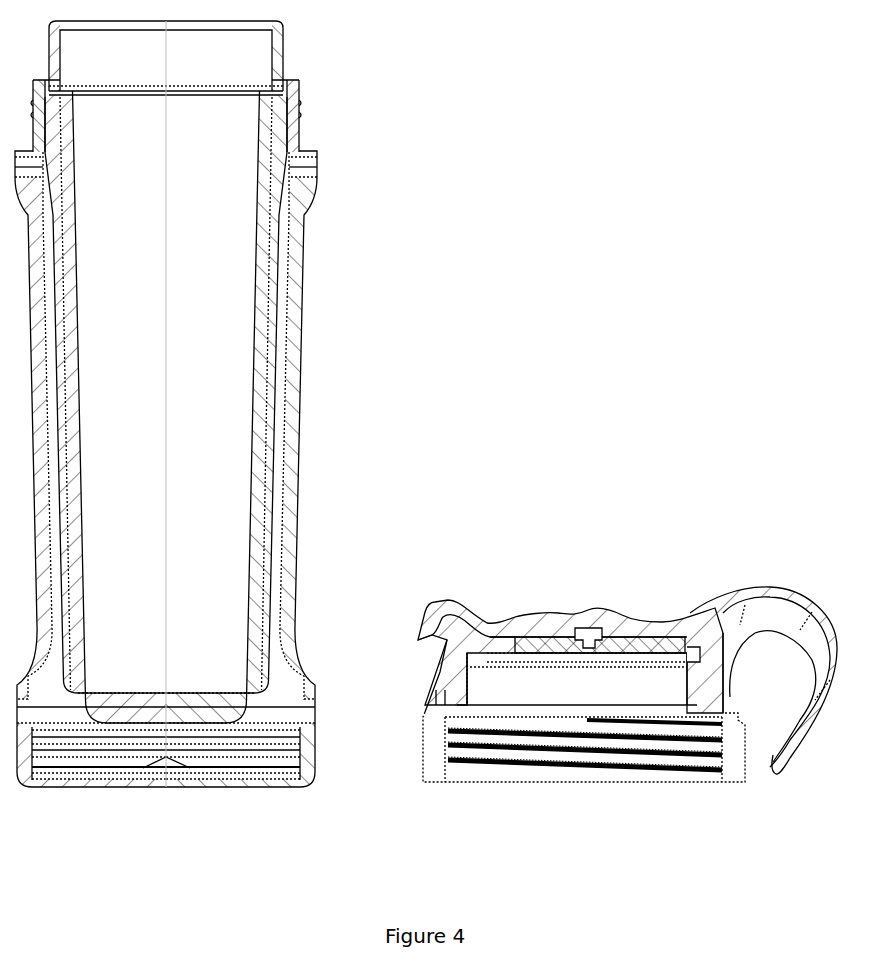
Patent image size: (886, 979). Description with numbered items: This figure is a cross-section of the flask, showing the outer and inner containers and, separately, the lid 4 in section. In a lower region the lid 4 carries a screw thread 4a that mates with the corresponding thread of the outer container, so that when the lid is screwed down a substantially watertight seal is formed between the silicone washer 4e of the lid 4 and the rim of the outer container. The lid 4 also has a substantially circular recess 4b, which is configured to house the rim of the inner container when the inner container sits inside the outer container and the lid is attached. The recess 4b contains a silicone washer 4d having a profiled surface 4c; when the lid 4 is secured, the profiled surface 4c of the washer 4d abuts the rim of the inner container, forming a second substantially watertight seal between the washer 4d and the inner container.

The lid 4 is at (625, 738).
The screw thread 4a is at (700, 775).
The substantially circular recess 4b is at (473, 665).
The profiled surface 4c is at (698, 662).
The silicone washer 4d is at (482, 655).
The silicone washer 4e is at (457, 708).